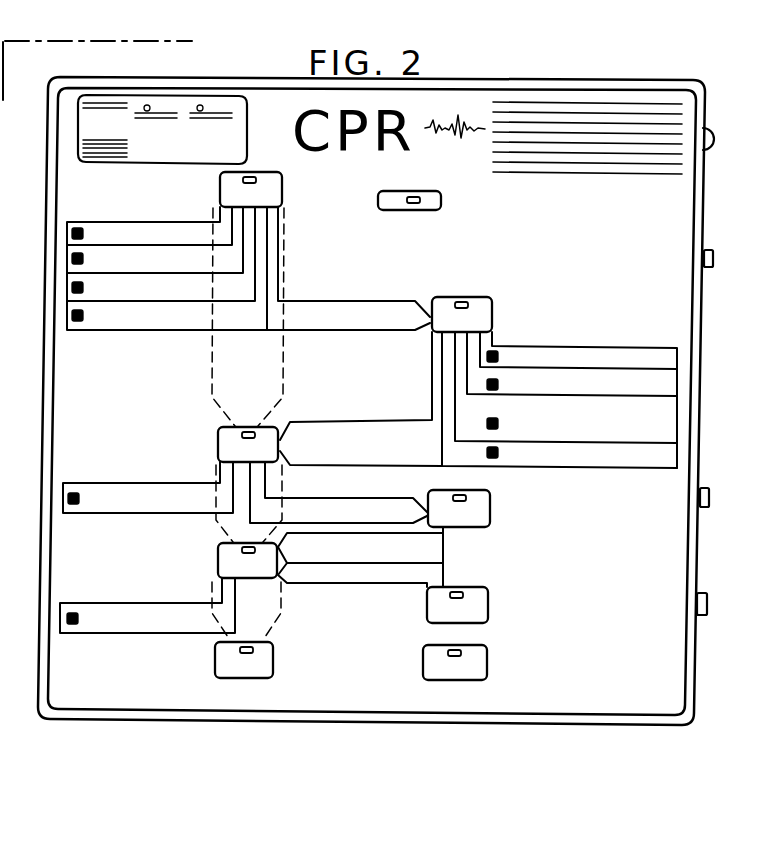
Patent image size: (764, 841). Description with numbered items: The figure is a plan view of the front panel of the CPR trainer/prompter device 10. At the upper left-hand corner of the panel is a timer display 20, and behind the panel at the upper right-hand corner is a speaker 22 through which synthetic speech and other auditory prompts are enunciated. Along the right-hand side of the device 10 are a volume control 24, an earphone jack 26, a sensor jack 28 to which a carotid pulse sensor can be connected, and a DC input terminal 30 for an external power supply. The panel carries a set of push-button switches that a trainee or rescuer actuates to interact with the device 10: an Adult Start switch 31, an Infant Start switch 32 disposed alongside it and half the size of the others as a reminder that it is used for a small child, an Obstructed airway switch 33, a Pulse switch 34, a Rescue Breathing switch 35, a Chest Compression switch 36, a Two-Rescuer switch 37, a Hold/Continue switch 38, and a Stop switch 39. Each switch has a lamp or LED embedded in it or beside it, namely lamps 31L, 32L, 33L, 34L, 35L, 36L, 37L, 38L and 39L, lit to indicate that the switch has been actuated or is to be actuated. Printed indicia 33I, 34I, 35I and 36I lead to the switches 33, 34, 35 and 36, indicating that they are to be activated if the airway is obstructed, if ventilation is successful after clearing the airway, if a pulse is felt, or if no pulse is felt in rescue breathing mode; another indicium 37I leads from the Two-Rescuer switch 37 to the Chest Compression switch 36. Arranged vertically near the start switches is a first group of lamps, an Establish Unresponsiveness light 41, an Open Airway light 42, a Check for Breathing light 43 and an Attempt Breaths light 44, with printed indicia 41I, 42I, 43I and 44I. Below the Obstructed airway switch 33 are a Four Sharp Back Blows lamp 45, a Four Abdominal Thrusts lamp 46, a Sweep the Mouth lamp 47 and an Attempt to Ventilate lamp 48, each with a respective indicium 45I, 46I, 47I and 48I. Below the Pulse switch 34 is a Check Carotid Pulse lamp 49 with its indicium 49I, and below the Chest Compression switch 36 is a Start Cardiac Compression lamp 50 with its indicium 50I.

The CPR trainer/prompter device 10 is at (535, 80).
The timer display 20 is at (236, 142).
The speaker 22 is at (547, 174).
The volume control 24 is at (714, 136).
The earphone jack 26 is at (713, 253).
The sensor jack 28 is at (709, 493).
The DC input terminal 30 is at (707, 597).
The Adult Start switch 31 is at (282, 195).
The lamp of Adult Start switch 31L is at (256, 179).
The Infant Start switch 32 is at (441, 203).
The lamp of Infant Start switch 32L is at (413, 198).
The Obstructed airway switch 33 is at (492, 313).
The lamp of Obstructed airway switch 33L is at (469, 304).
The Pulse switch 34 is at (218, 446).
The lamp of Pulse switch 34L is at (246, 434).
The Rescue Breathing switch 35 is at (483, 512).
The lamp of Rescue Breathing switch 35L is at (466, 498).
The Chest Compression switch 36 is at (218, 562).
The lamp of Chest Compression switch 36L is at (246, 551).
The Two-Rescuer switch 37 is at (490, 607).
The lamp of Two-Rescuer switch 37L is at (464, 595).
The Hold/Continue switch 38 is at (489, 667).
The lamp of Hold/Continue switch 38L is at (462, 653).
The Stop switch 39 is at (215, 662).
The lamp of Stop switch 39L is at (245, 650).
The Establish Unresponsiveness light 41 is at (83, 228).
The Open Airway light 42 is at (68, 261).
The Check for Breathing light 43 is at (68, 290).
The Attempt Breaths light 44 is at (68, 318).
The Four Sharp Back Blows lamp 45 is at (498, 350).
The Four Abdominal Thrusts lamp 46 is at (497, 380).
The Sweep the Mouth lamp 47 is at (487, 422).
The Attempt to Ventilate lamp 48 is at (498, 458).
The Check Carotid Pulse lamp 49 is at (79, 493).
The Start Cardiac Compression lamp 50 is at (78, 613).
The "ESTABLISH UNRESPONSIVENESS" indicium 41I is at (119, 222).
The "OPEN AIRWAY" indicium 42I is at (149, 252).
The "CHECK FOR BREATHING" indicium 43I is at (147, 292).
The "ATTEMPT 4 QUICK BREATHS" indicium 44I is at (100, 321).
The "FOUR SHARP BACK BLOWS" indicium 45I is at (655, 357).
The "FOUR ABDOMINAL THRUSTS/FOUR CHEST THRUSTS" indicium 46I is at (655, 395).
The "SWEEP THE MOUTH/LOOK IN THE MOUTH" indicium 47I is at (655, 423).
The "ATTEMPT TO VENTILATE" indicium 48I is at (655, 453).
The Check Carotid Pulse indicium 49I is at (113, 498).
The Start Cardiac Compression indicium 50I is at (108, 618).
The printed indicium leading to Obstructed airway switch 33I is at (343, 300).
The printed indicium leading to Pulse switch 34I is at (328, 437).
The printed indicium leading to Rescue Breathing switch 35I is at (334, 510).
The printed indicium leading to Chest Compression switch 36I is at (410, 551).
The indicium from Two-Rescuer switch to Chest Compression switch 37I is at (343, 572).